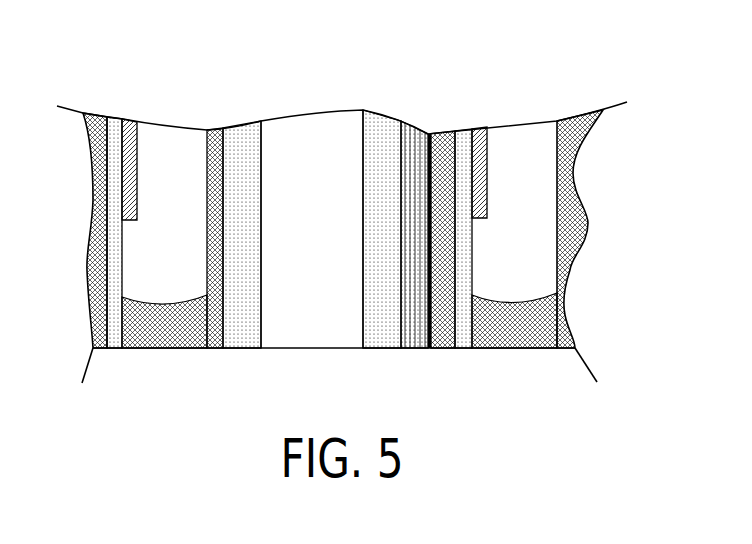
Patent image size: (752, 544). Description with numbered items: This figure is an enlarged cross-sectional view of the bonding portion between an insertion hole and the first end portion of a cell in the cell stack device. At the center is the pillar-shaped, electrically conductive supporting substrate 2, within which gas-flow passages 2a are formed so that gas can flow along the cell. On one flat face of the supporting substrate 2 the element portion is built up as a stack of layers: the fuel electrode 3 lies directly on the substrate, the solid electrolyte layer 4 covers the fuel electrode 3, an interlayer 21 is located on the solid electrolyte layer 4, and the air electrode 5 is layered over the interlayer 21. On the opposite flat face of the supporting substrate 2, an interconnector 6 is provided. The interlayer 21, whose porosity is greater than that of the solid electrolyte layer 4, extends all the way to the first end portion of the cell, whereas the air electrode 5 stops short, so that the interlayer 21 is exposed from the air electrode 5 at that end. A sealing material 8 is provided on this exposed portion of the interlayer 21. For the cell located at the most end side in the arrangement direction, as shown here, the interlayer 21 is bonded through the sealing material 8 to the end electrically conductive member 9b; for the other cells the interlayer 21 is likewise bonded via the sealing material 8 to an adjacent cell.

The supporting substrate 2 is at (385, 130).
The gas-flow passage 2a is at (322, 147).
The fuel electrode 3 is at (413, 147).
The solid electrolyte layer 4 is at (95, 133).
The air electrode 5 is at (130, 140).
The interconnector 6 is at (215, 160).
The sealing material 8 is at (182, 313).
The end electrically conductive member 9b is at (568, 153).
The interlayer 21 is at (118, 135).